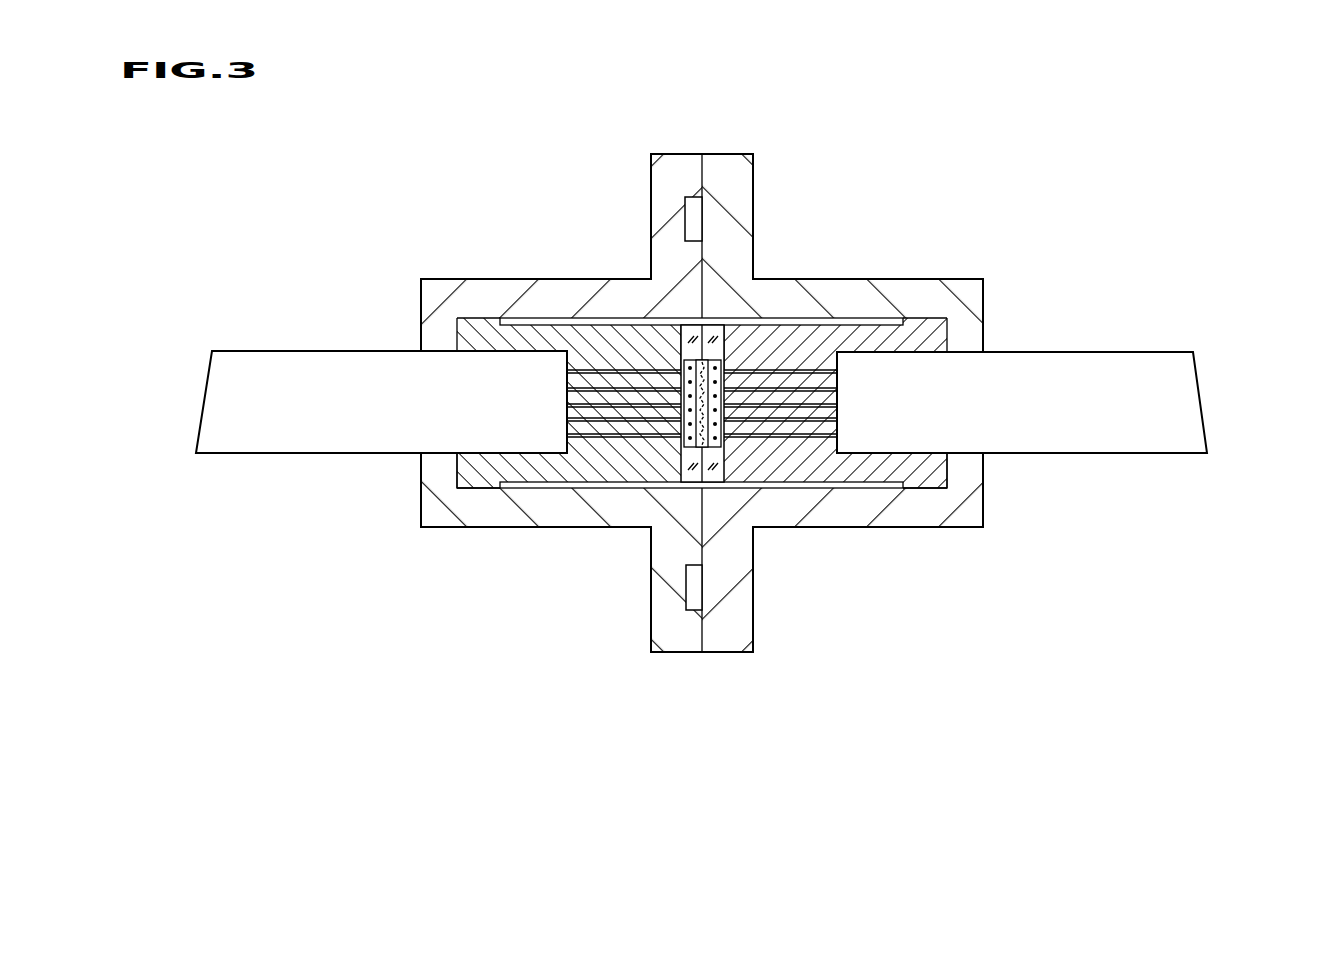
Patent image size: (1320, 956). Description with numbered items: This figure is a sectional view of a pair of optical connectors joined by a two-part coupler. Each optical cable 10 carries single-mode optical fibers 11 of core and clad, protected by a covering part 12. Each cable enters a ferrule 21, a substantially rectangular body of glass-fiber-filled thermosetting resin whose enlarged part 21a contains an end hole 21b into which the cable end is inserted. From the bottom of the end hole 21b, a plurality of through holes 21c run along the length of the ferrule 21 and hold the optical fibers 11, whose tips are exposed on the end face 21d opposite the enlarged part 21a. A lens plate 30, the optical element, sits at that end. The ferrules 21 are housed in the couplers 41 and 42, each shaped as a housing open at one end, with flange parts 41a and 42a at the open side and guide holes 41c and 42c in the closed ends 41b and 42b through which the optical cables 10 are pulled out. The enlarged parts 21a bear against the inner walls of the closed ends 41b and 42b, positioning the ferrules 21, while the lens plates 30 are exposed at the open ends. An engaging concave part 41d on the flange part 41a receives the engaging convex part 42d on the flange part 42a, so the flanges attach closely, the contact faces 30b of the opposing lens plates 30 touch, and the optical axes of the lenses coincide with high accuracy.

The optical cable 10 is at (227, 395).
The optical fiber 11 is at (600, 445).
The covering part 12 is at (256, 350).
The ferrule 21 is at (548, 492).
The enlarged part 21a is at (490, 320).
The end hole 21b is at (482, 325).
The through hole 21c is at (585, 380).
The end face 21d is at (660, 340).
The lens plate 30 is at (686, 485).
The contact face 30b is at (690, 460).
The coupler 41 is at (423, 290).
The flange part 41a is at (683, 154).
The closed end 41b is at (458, 475).
The guide hole 41c is at (420, 437).
The engaging concave part 41d is at (688, 205).
The coupler 42 is at (980, 290).
The flange part 42a is at (718, 154).
The closed end 42b is at (940, 478).
The guide hole 42c is at (975, 432).
The engaging convex part 42d is at (695, 238).